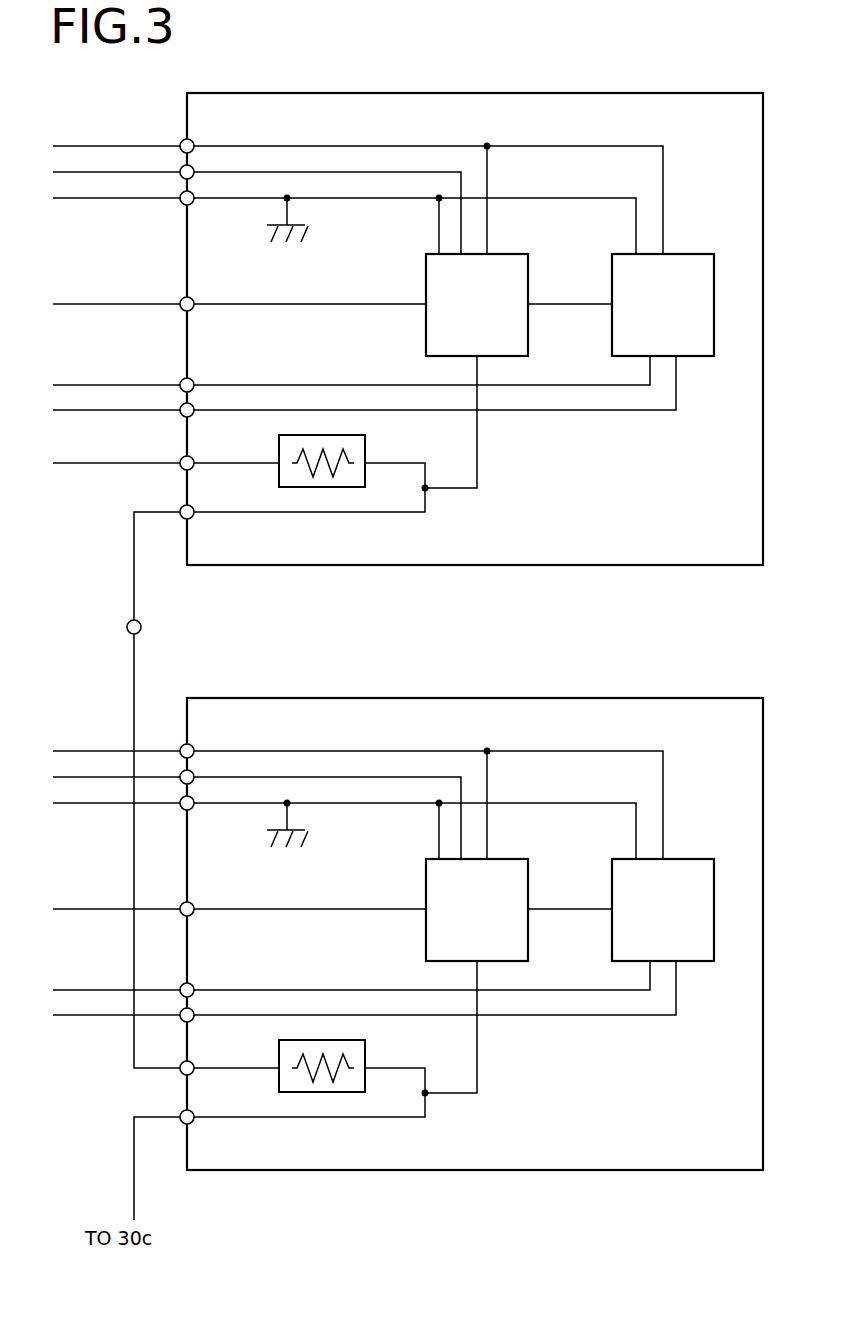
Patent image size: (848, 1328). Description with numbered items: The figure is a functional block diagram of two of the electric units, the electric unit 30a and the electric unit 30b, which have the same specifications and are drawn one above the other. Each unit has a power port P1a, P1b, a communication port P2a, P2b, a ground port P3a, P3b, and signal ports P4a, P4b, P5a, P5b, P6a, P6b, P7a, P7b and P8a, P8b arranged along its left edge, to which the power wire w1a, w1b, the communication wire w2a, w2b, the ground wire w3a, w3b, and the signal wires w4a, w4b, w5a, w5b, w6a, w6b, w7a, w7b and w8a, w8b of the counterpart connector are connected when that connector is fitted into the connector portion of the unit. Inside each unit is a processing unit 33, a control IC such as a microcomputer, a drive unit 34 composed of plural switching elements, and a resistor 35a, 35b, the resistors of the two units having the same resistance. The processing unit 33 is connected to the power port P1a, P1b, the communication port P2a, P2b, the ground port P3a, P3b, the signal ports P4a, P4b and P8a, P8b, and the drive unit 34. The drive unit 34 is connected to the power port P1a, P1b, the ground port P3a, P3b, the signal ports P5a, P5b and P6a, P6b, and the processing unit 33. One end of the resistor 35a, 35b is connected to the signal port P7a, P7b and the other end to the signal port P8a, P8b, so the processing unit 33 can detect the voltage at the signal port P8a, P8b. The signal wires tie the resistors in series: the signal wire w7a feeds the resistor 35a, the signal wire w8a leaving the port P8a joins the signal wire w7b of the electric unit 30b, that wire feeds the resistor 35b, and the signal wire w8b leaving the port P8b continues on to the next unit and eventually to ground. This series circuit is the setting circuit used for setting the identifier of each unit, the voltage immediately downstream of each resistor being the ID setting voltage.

The electric unit 30a is at (448, 93).
The electric unit 30b is at (471, 915).
The processing unit 33 is at (505, 254).
The drive unit 34 is at (682, 254).
The resistor 35a is at (345, 435).
The resistor 35b is at (372, 1057).
The power port P1a is at (194, 146).
The communication port P2a is at (194, 172).
The ground port P3a is at (194, 198).
The signal port P4a is at (194, 304).
The signal port P5a is at (194, 385).
The signal port P6a is at (194, 410).
The signal port P7a is at (194, 463).
The signal port P8a is at (194, 512).
The power port P1b is at (222, 744).
The communication port P2b is at (222, 770).
The ground port P3b is at (222, 796).
The signal port P4b is at (222, 902).
The signal port P5b is at (222, 983).
The signal port P6b is at (222, 1008).
The signal port P7b is at (222, 1061).
The signal port P8b is at (222, 1110).
The power wire w1a is at (68, 146).
The communication wire w2a is at (107, 172).
The ground wire w3a is at (148, 198).
The signal wire w4a is at (105, 304).
The signal wire w5a is at (105, 385).
The signal wire w6a is at (115, 410).
The signal wire w7a is at (150, 463).
The signal wire w8a is at (134, 530).
The power wire w1b is at (116, 707).
The communication wire w2b is at (116, 731).
The ground wire w3b is at (116, 753).
The signal wire w4b is at (116, 879).
The signal wire w5b is at (116, 960).
The signal wire w6b is at (110, 1031).
The signal wire w7b is at (110, 858).
The signal wire w8b is at (110, 1168).